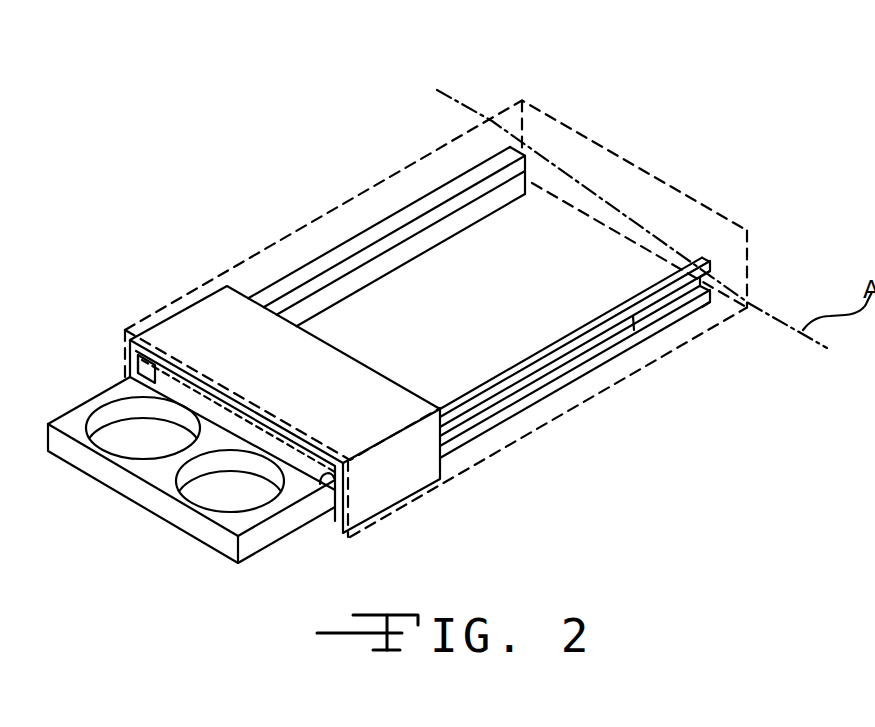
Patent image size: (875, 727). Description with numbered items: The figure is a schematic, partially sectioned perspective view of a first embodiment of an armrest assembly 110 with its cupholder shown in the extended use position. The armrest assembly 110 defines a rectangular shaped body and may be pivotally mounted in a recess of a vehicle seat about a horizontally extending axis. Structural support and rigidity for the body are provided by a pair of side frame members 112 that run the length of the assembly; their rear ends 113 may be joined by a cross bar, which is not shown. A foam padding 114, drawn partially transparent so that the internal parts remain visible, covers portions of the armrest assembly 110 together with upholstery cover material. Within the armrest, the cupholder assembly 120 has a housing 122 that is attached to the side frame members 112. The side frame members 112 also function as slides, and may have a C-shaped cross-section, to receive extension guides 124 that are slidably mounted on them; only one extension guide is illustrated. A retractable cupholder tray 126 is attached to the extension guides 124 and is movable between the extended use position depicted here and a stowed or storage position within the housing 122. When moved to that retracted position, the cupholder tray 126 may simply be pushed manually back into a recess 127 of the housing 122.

The armrest assembly 110 is at (653, 147).
The side frame members 112 is at (465, 178).
The rear ends 113 is at (528, 180).
The foam padding 114 is at (603, 163).
The cupholder assembly 120 is at (310, 536).
The housing 122 is at (413, 462).
The extension guides 124 is at (597, 345).
The cupholder tray 126 is at (223, 533).
The recess 127 is at (190, 400).